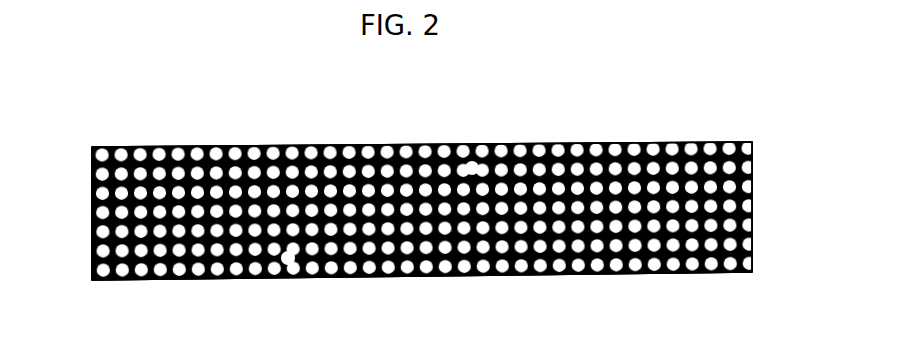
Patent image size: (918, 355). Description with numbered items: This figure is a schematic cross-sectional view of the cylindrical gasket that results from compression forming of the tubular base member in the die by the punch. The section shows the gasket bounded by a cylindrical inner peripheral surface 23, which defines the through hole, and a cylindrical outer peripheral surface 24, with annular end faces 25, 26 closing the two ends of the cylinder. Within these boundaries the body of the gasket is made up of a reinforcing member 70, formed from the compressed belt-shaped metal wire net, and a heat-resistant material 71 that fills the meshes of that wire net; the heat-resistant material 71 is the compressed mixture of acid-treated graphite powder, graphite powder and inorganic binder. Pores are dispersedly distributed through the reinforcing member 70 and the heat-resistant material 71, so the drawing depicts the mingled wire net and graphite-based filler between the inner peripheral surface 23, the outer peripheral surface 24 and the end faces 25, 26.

The cylindrical inner peripheral surface 23 is at (413, 278).
The cylindrical outer peripheral surface 24 is at (374, 146).
The annular end face 25 is at (752, 186).
The annular end face 26 is at (92, 190).
The reinforcing member 70 is at (472, 168).
The heat-resistant material 71 is at (288, 258).